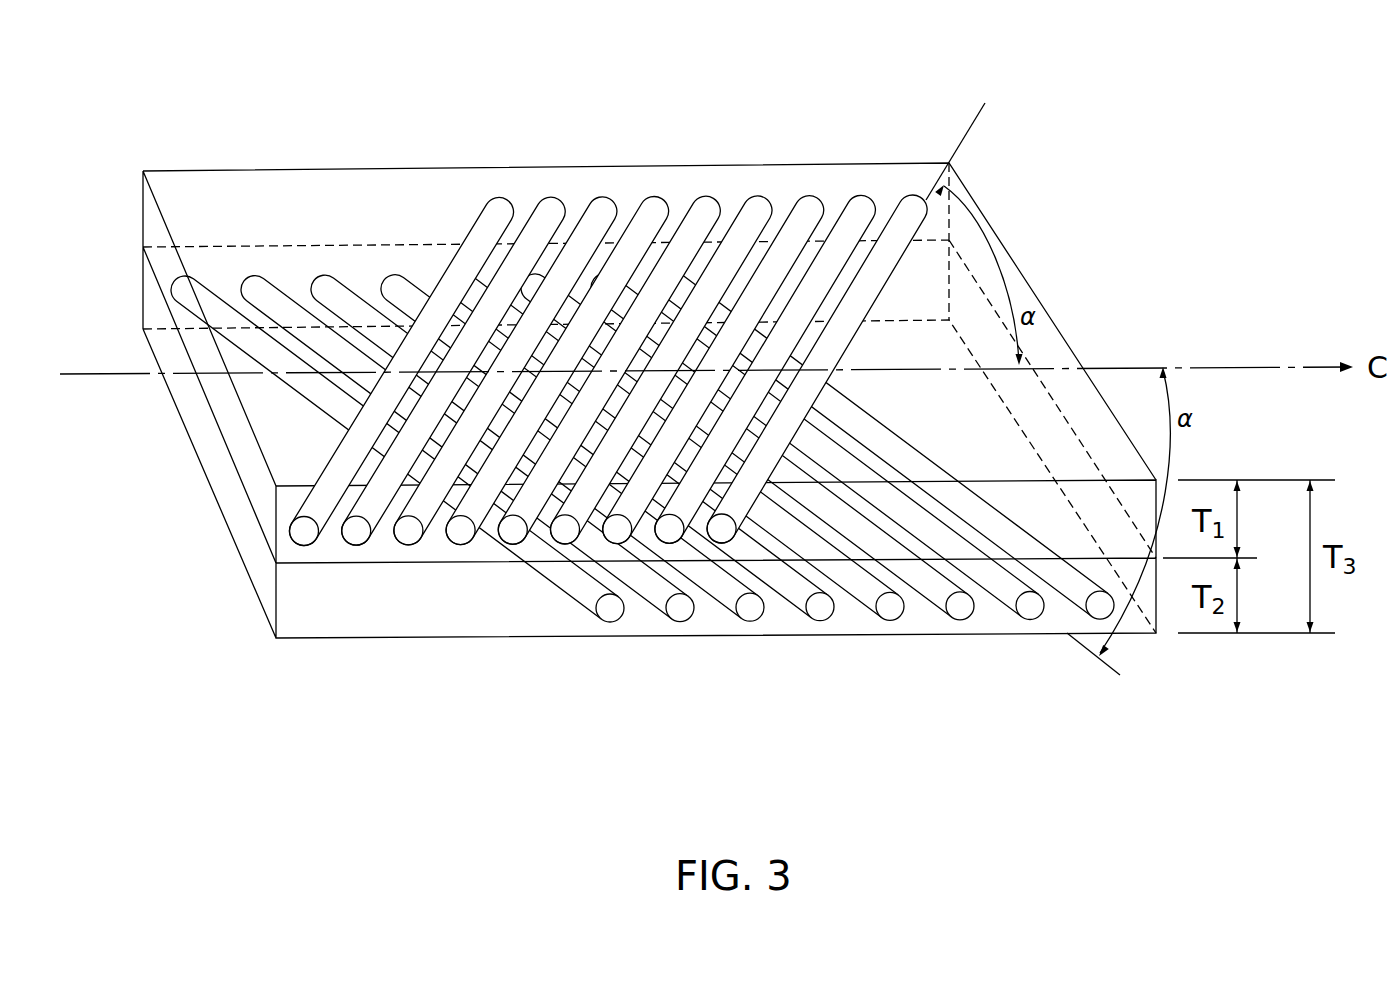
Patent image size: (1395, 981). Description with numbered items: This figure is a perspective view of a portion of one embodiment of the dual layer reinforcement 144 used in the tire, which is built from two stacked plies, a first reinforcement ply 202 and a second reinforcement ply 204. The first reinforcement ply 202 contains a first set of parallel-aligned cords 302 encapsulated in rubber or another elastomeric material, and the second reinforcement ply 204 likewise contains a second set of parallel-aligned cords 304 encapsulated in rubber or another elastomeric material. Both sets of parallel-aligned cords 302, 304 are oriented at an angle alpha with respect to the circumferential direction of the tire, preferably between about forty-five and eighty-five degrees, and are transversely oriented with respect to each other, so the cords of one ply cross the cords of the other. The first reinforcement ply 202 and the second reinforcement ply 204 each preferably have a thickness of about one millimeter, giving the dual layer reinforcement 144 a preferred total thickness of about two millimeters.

The dual layer reinforcement 144 is at (649, 390).
The first reinforcement ply 202 is at (276, 208).
The second reinforcement ply 204 is at (370, 607).
The first set of parallel-aligned cords 302 is at (357, 537).
The second set of parallel-aligned cords 304 is at (685, 608).